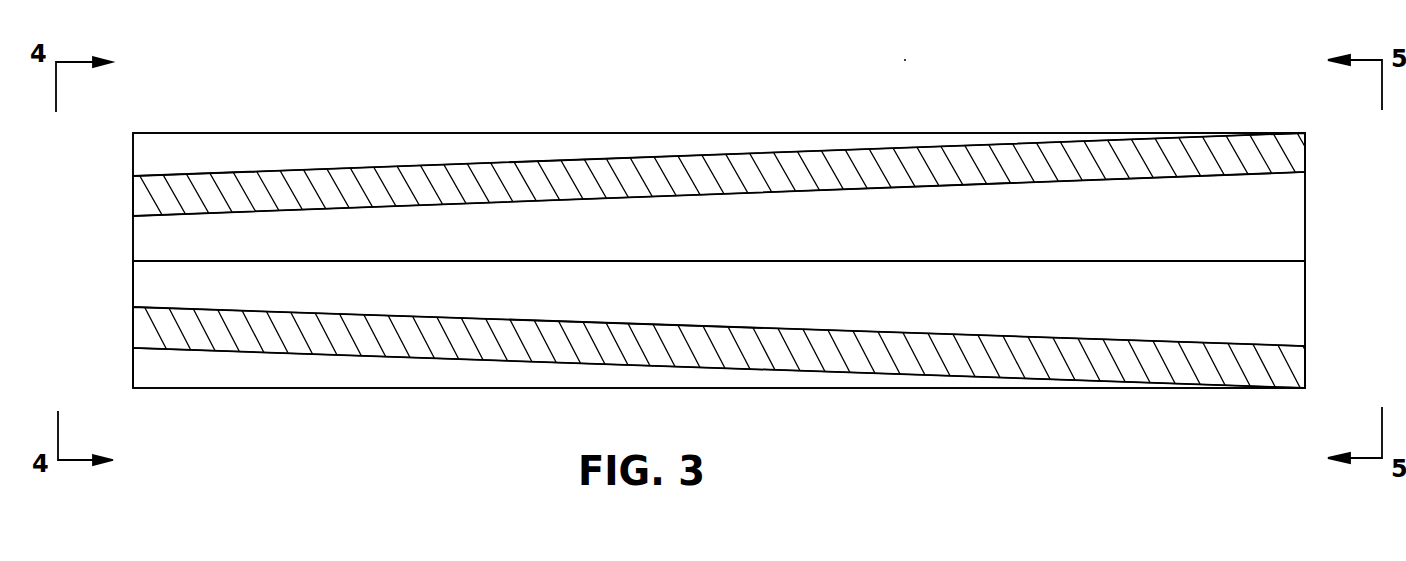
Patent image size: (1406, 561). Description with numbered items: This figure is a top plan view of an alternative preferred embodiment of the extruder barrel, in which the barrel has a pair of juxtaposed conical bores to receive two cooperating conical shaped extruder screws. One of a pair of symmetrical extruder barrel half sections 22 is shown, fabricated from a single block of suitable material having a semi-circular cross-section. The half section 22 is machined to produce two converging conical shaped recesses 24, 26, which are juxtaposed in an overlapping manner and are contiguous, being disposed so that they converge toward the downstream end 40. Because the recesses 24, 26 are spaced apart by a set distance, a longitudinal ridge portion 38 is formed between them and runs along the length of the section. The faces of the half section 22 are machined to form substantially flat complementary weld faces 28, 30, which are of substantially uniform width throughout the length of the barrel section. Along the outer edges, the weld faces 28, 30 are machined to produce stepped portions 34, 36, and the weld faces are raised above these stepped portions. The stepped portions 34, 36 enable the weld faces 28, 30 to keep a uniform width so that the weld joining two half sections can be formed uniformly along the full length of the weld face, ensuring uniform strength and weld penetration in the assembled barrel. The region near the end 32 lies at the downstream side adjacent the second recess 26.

The extruder barrel half section 22 is at (542, 133).
The conical recess 24 is at (1252, 223).
The conical recess 26 is at (1263, 297).
The weld face 28 is at (992, 163).
The weld face 30 is at (1078, 355).
The end portion 32 is at (1306, 326).
The stepped portion 34 is at (165, 153).
The stepped portion 36 is at (161, 368).
The longitudinal ridge portion 38 is at (1307, 260).
The downstream end 40 is at (133, 332).